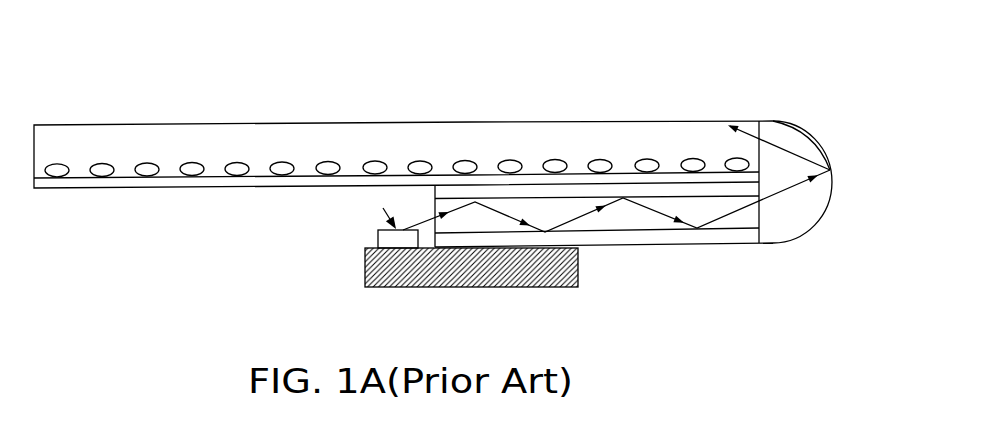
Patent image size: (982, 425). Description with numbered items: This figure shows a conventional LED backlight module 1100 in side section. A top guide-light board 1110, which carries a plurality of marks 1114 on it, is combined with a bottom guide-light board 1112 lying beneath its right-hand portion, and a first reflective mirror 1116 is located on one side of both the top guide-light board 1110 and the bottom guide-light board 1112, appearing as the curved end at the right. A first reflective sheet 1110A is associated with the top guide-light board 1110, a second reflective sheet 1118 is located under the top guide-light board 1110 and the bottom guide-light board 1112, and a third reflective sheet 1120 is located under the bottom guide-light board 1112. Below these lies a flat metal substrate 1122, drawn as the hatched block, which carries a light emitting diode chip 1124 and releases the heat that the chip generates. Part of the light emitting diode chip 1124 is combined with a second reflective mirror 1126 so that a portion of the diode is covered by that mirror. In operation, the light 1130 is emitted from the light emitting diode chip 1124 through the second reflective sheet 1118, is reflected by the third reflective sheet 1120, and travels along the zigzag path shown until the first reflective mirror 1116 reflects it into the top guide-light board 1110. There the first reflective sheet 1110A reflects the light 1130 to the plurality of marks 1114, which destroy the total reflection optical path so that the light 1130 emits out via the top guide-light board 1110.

The LED backlight module 1100 is at (779, 70).
The top guide-light board 1110 is at (144, 137).
The first reflective sheet 1110A is at (300, 181).
The marks 1114 is at (417, 166).
The second reflective sheet 1118 is at (528, 190).
The first reflective mirror 1116 is at (818, 143).
The bottom guide-light board 1112 is at (702, 217).
The light 1130 is at (437, 210).
The third reflective sheet 1120 is at (632, 238).
The flat metal substrate 1122 is at (522, 267).
The second reflective mirror 1126 is at (388, 242).
The light emitting diode chip 1124 is at (420, 186).